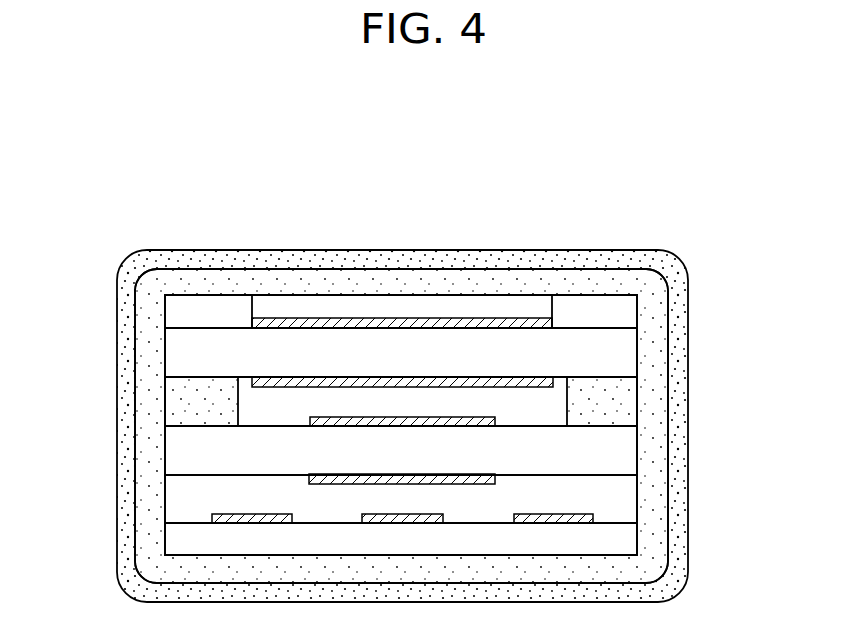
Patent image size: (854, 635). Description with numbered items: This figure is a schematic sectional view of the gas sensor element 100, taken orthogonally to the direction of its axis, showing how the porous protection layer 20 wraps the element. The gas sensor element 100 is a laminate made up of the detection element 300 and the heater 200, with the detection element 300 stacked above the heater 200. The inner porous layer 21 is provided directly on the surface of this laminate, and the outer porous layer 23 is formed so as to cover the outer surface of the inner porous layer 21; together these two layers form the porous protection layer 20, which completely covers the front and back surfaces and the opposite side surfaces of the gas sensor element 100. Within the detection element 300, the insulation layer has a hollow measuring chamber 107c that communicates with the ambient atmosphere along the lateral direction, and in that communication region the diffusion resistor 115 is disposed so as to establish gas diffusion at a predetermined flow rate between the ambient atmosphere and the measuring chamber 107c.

The gas sensor element 100 is at (414, 345).
The porous protection layer 20 is at (402, 352).
The inner porous layer 21 is at (169, 258).
The outer porous layer 23 is at (253, 282).
The detection element 300 is at (414, 385).
The heater 200 is at (640, 555).
The diffusion resistor 115 is at (190, 403).
The measuring chamber 107c is at (405, 413).